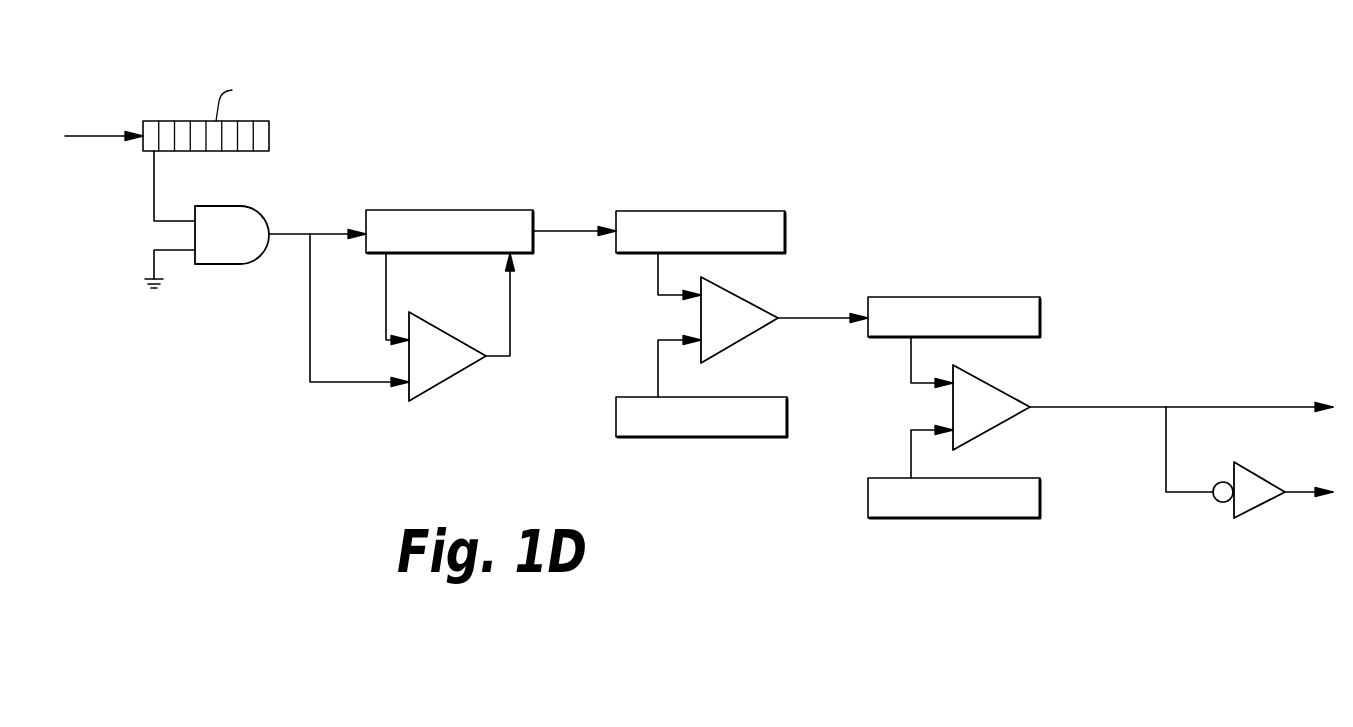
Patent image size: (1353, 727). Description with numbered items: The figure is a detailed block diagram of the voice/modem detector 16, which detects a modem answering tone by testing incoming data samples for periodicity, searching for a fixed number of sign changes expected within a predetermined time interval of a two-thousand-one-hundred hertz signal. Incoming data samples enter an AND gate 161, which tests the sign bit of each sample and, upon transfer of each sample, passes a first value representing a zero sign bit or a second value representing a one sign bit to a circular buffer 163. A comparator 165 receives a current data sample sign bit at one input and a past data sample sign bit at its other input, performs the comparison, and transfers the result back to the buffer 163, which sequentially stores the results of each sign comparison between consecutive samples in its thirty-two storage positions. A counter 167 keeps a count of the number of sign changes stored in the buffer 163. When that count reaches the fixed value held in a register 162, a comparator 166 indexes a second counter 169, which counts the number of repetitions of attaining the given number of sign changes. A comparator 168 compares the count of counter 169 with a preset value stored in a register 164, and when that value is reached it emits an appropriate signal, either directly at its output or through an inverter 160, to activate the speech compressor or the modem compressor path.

The voice/modem detector 16 is at (835, 43).
The inverter 160 is at (1253, 508).
The AND gate 161 is at (235, 206).
The register 162 is at (693, 437).
The circular buffer 163 is at (424, 210).
The register 164 is at (970, 518).
The comparator 165 is at (447, 378).
The comparator 166 is at (752, 303).
The counter 167 is at (675, 211).
The comparator 168 is at (993, 382).
The second counter 169 is at (928, 297).